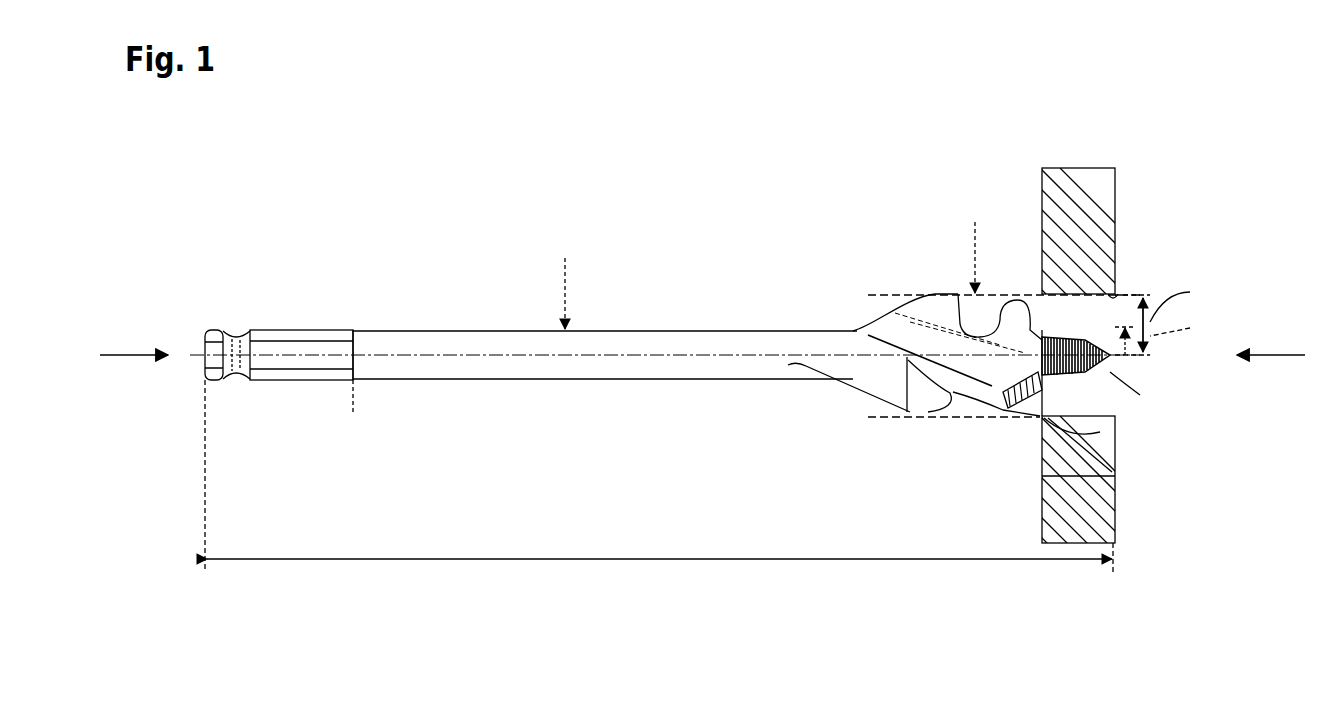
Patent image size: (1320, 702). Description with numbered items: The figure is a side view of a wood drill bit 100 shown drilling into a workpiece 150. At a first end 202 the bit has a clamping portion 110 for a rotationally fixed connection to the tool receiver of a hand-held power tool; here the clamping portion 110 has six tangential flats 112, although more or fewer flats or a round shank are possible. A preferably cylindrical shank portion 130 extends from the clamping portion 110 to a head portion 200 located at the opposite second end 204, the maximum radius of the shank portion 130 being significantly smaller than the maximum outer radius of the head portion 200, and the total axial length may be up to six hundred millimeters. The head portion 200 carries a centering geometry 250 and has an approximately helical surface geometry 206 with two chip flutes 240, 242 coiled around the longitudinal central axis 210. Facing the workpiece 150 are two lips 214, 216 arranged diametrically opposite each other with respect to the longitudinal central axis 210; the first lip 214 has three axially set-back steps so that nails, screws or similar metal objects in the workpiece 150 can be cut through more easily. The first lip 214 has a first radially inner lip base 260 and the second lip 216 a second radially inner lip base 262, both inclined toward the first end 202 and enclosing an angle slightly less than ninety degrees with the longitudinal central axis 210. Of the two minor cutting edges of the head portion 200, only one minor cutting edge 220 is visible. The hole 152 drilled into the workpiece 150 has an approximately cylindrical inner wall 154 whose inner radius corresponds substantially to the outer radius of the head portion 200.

The wood drill bit 100 is at (390, 188).
The clamping portion 110 is at (353, 408).
The hexagonal shank surfaces 112 is at (310, 375).
The shank portion 130 is at (787, 408).
The workpiece 150 is at (1082, 185).
The hole 152 is at (1114, 412).
The inner wall 154 is at (1114, 300).
The head portion 200 is at (787, 331).
The first end 202 is at (122, 355).
The second end 204 is at (1281, 355).
The helical surface geometry 206 is at (849, 387).
The longitudinal central axis 210 is at (238, 342).
The first lip 214 is at (958, 310).
The second lip 216 is at (1114, 432).
The minor cutting edge 220 is at (925, 412).
The chip flute 240 is at (812, 358).
The chip flute 242 is at (892, 312).
The centering geometry 250 is at (1112, 360).
The first radially inner lip base 260 is at (1020, 310).
The second radially inner lip base 262 is at (1100, 400).